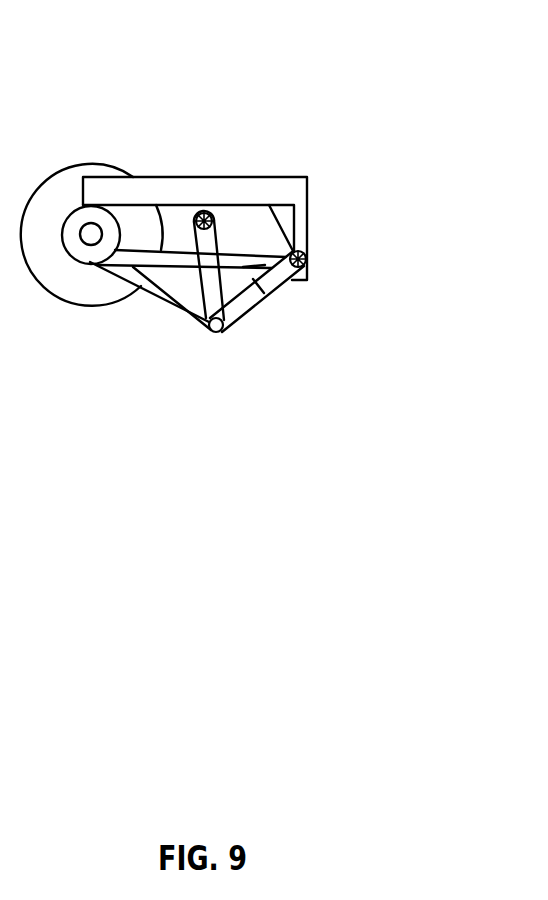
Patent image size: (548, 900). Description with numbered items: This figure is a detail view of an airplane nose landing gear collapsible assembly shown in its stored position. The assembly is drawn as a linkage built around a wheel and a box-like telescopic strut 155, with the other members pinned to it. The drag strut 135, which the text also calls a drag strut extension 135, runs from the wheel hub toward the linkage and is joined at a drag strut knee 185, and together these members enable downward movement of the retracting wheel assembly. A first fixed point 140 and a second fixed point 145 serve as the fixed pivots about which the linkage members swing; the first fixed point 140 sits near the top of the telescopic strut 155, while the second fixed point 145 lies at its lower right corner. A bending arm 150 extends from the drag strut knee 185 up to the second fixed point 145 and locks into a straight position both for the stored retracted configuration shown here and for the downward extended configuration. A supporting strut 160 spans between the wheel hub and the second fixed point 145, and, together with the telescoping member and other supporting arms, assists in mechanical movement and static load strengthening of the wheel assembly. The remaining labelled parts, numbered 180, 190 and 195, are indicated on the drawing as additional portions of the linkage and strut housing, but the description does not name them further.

The drag strut 135 is at (158, 290).
The first fixed point 140 is at (207, 213).
The second fixed point 145 is at (306, 262).
The bending arm 150 is at (252, 295).
The telescopic strut 155 is at (273, 190).
The supporting strut 160 is at (291, 279).
The third link 180 is at (215, 290).
The drag strut knee 185 is at (216, 333).
The side wall 190 is at (302, 239).
The top wall 195 is at (285, 213).